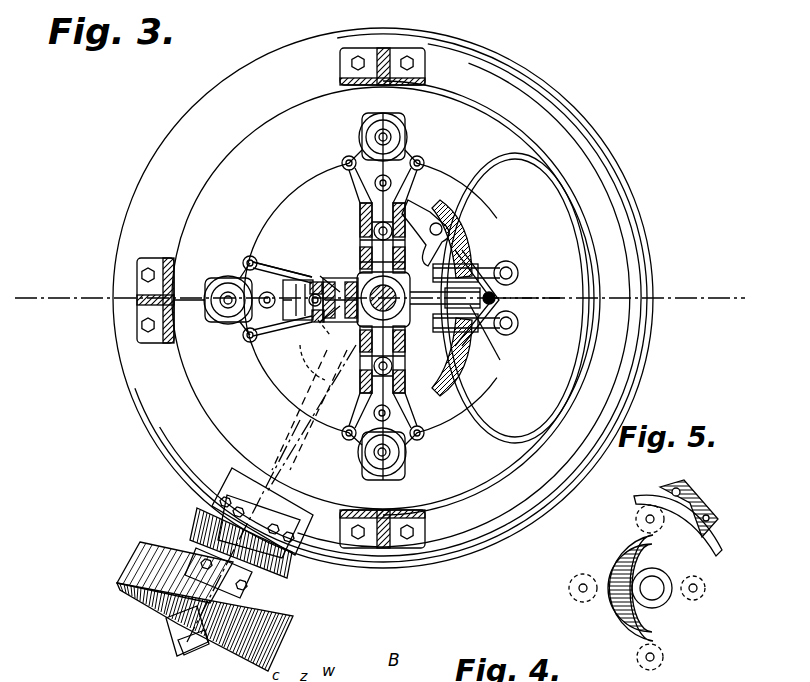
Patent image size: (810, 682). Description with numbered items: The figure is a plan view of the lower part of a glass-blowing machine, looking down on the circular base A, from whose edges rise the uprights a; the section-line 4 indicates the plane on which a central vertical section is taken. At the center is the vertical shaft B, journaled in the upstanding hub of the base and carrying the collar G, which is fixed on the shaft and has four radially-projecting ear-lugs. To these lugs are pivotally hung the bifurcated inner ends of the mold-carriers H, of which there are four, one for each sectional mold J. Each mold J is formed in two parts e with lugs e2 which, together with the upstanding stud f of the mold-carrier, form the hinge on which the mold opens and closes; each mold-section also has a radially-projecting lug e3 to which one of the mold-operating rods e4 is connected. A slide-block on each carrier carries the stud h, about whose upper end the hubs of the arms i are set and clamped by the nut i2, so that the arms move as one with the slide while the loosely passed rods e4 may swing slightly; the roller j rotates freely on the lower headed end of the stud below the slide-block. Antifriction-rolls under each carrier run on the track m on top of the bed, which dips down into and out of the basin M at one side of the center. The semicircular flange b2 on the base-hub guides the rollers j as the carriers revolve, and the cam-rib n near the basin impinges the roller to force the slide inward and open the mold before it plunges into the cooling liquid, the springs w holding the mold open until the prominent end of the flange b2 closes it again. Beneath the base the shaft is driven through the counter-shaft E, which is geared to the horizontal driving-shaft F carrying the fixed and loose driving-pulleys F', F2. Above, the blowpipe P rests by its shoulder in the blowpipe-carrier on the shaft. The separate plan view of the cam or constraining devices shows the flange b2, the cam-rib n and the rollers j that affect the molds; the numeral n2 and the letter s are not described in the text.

In FIG. 3, the section-line 4 4 is at (379, 298).
In FIG. 3, the base A is at (383, 298).
In FIG. 3, the uprights a is at (372, 86).
In FIG. 3, the track m is at (298, 186).
In FIG. 3, the central vertical shaft B is at (393, 296).
In FIG. 3, the sectional mold J is at (357, 296).
In FIG. 3, the blowpipe P is at (388, 140).
In FIG. 3, the upstanding stud f is at (392, 183).
In FIG. 3, the mold-carrier H is at (360, 186).
In FIG. 3, the stud h is at (372, 226).
In FIG. 3, the arms i is at (313, 282).
In FIG. 3, the nut i2 is at (309, 350).
In FIG. 3, the semicircular flange b2 is at (340, 282).
In FIG. 5, the semicircular flange b2 is at (612, 616).
In FIG. 3, the mold-operating rods e4 is at (300, 268).
In FIG. 3, the springs w is at (392, 256).
In FIG. 3, the hook piece n2 is at (437, 293).
In FIG. 3, the mold parts e is at (515, 266).
In FIG. 3, the lugs e2 is at (490, 268).
In FIG. 3, the radially-projecting lug e3 is at (468, 262).
In FIG. 3, the stud s is at (500, 302).
In FIG. 3, the basin M is at (508, 345).
In FIG. 3, the counter-shaft E is at (282, 446).
In FIG. 3, the collar G is at (274, 546).
In FIG. 3, the fixed driving-pulley F' is at (258, 576).
In FIG. 3, the loose driving-pulley F2 is at (280, 660).
In FIG. 3, the horizontal driving-shaft F is at (186, 640).
In FIG. 5, the roller j is at (636, 519).
In FIG. 5, the cam-rib n is at (700, 510).